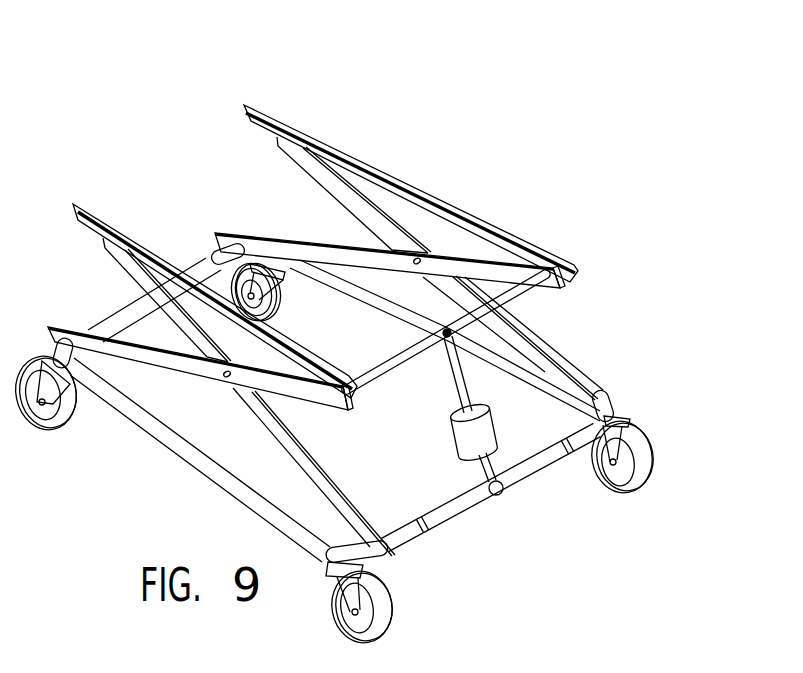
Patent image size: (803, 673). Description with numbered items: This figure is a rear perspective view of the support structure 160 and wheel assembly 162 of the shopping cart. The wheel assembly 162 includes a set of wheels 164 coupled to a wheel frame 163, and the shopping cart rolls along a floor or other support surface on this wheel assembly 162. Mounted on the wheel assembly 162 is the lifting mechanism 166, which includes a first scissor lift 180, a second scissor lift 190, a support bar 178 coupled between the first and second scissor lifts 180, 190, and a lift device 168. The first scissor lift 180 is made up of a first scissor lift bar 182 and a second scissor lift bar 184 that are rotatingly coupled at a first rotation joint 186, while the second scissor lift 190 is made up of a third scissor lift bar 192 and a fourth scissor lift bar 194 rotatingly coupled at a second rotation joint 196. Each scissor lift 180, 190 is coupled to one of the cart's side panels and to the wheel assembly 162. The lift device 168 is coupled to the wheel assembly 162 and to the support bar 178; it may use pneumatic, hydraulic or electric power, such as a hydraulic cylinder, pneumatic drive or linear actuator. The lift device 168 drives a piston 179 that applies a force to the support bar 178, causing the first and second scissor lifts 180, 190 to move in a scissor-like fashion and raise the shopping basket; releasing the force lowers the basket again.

The collapsible cart 160 is at (150, 78).
The wheel assembly 162 is at (660, 355).
The wheel frame 163 is at (245, 492).
The set of wheels 164 is at (566, 565).
The lifting mechanism 166 is at (520, 162).
The lift device 168 is at (463, 443).
The support bar 178 is at (517, 288).
The piston 179 is at (458, 387).
The first scissor lift 180 is at (322, 94).
The first scissor lift bar 182 is at (278, 241).
The second scissor lift bar 184 is at (339, 185).
The first rotation joint 186 is at (421, 257).
The second scissor lift 190 is at (172, 218).
The third scissor lift bar 192 is at (148, 358).
The fourth scissor lift bar 194 is at (140, 268).
The second rotation joint 196 is at (228, 378).